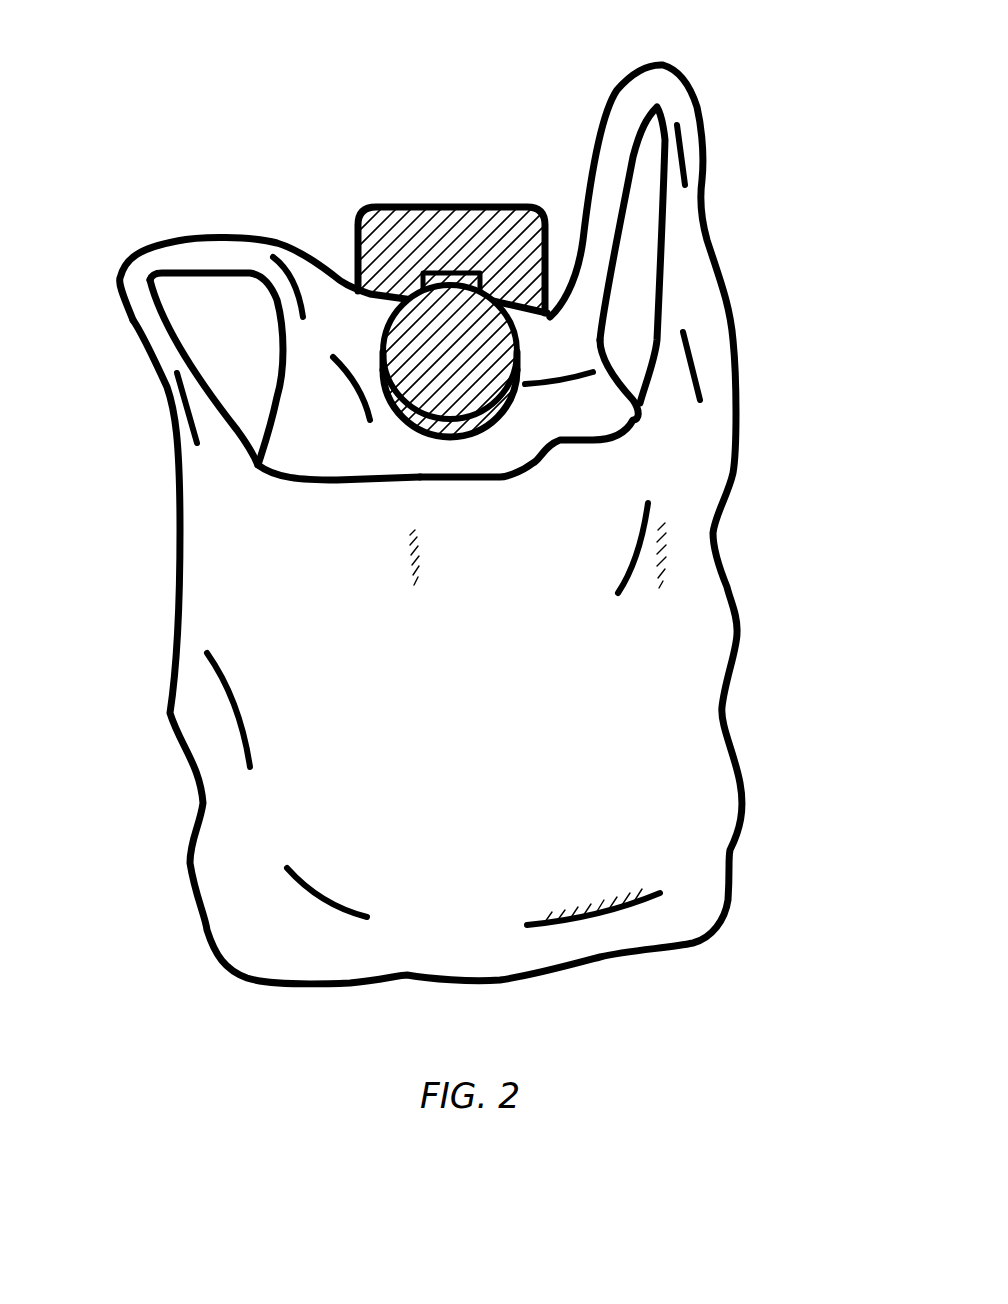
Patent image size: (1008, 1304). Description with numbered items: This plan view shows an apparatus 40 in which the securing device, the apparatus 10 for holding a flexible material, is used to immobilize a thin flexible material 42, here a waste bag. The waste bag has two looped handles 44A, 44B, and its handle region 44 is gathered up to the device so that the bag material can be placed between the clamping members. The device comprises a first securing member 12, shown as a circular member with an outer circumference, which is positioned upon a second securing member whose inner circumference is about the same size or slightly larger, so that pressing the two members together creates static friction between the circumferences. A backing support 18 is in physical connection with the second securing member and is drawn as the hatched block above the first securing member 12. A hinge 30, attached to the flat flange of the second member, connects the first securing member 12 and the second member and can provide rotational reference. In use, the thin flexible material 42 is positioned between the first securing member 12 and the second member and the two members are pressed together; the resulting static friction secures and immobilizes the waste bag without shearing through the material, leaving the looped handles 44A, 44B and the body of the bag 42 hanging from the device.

The apparatus 10 is at (444, 257).
The first securing member 12 is at (384, 340).
The backing support 18 is at (405, 200).
The hinge 30 is at (462, 278).
The apparatus 40 is at (461, 524).
The thin flexible material 42 is at (737, 475).
The bag opening 44 is at (386, 428).
The looped handle 44A is at (133, 323).
The looped handle 44B is at (717, 250).